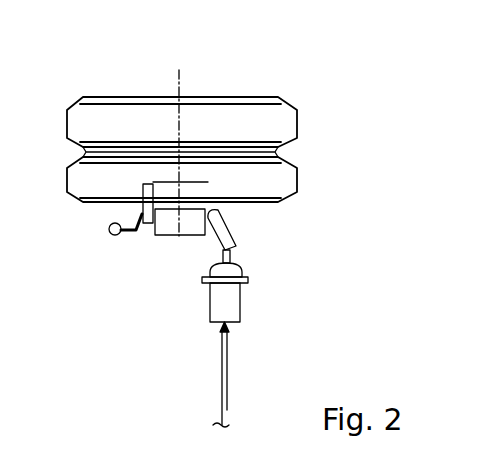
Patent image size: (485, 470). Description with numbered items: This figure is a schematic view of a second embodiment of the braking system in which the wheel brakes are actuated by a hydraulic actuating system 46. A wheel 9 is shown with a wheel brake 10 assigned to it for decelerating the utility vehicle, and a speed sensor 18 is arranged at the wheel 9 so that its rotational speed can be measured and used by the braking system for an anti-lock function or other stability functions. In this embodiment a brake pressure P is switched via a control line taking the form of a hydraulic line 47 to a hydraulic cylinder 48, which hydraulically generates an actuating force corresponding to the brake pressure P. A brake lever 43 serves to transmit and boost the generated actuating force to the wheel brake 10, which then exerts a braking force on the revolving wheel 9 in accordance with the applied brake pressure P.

The wheel 9 is at (273, 185).
The speed sensor 18 is at (143, 186).
The wheel brake 10 is at (170, 228).
The brake lever 43 is at (240, 229).
The hydraulic actuating system 46 is at (255, 280).
The hydraulic cylinder 48 is at (233, 303).
The hydraulic line 47 is at (222, 343).
The brake pressure P is at (228, 367).